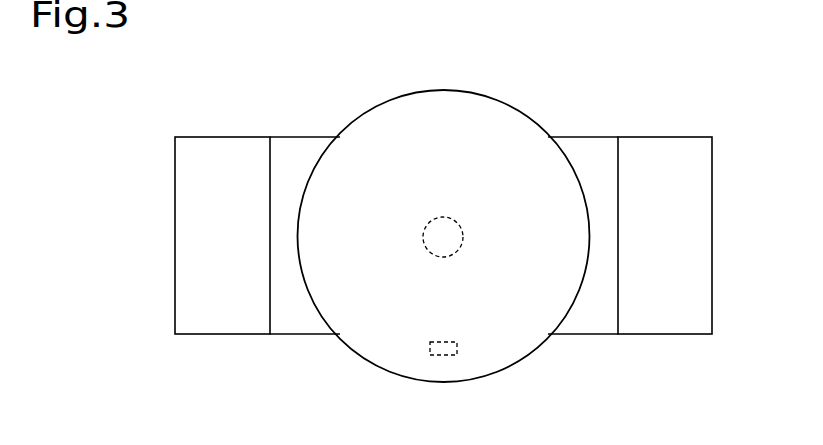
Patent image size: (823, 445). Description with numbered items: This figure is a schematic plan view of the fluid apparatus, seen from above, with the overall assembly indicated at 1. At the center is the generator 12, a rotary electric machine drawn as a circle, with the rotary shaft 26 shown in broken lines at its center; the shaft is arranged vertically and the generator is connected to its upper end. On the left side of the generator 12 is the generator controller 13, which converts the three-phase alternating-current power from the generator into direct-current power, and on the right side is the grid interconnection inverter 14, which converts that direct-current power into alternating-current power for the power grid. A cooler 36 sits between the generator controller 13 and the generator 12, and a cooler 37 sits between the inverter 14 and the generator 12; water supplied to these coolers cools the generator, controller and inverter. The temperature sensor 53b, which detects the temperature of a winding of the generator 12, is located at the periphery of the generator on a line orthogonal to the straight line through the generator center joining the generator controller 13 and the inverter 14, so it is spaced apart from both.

The image forming apparatus 1 is at (736, 102).
The generator 12 is at (509, 106).
The generator controller 13 is at (218, 148).
The grid interconnection inverter 14 is at (662, 148).
The rotary shaft 26 is at (444, 217).
The cooler 36 is at (296, 148).
The cooler 37 is at (585, 148).
The temperature sensor 53b is at (444, 357).